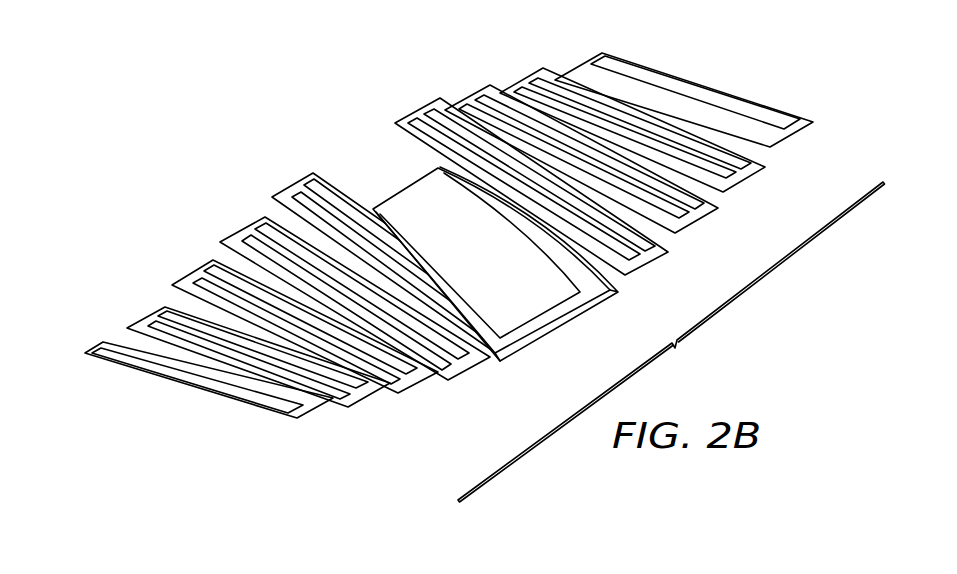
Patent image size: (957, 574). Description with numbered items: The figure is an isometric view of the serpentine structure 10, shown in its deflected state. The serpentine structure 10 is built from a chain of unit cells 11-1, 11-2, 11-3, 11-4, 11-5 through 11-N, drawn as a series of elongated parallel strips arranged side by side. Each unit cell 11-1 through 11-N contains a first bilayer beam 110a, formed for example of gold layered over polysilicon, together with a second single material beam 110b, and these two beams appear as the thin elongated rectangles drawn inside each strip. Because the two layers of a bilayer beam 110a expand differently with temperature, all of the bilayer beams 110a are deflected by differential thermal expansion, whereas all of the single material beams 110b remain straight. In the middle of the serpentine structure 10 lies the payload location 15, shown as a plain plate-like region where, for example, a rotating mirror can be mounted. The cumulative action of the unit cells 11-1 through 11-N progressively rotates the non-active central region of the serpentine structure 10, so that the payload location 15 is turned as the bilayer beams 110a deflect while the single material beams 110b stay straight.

The serpentine structure 10 is at (671, 342).
The unit cell 11-1 is at (306, 416).
The unit cell 11-2 is at (351, 408).
The unit cell 11-3 is at (421, 381).
The unit cell 11-4 is at (480, 364).
The unit cell 11-5 is at (650, 265).
The unit cell 11-N is at (793, 133).
The payload location 15 is at (407, 200).
The first bilayer beam 110a is at (104, 345).
The second single material beam 110b is at (142, 325).